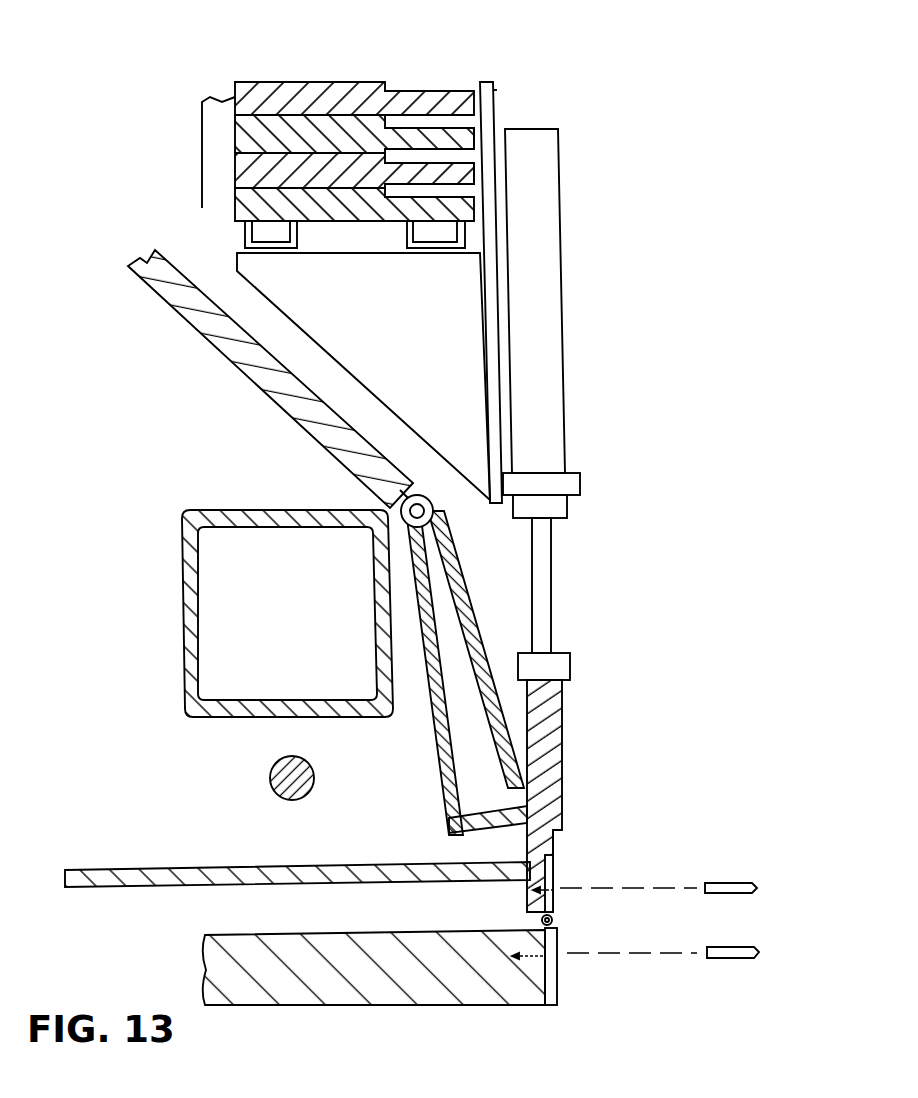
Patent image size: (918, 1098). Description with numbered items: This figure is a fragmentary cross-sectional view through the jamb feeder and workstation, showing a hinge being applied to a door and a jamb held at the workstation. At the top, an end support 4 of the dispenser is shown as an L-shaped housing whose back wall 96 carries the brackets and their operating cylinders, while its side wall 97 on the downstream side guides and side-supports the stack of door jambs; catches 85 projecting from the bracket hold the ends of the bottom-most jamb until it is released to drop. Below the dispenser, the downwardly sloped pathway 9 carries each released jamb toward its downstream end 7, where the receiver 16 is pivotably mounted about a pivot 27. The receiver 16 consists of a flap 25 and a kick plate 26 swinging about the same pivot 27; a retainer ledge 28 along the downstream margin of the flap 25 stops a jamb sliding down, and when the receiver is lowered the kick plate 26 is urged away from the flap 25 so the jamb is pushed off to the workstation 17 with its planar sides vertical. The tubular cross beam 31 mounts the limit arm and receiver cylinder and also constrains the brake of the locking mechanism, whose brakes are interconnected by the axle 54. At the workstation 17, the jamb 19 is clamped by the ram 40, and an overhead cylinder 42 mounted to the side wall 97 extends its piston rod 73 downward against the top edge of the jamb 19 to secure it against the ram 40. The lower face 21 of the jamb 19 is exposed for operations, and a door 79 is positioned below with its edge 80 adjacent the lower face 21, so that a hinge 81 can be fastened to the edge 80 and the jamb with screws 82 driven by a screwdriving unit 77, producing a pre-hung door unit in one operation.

The end support 4 is at (484, 82).
The downstream end 7 is at (420, 486).
The pathway 9 is at (200, 253).
The receiver 16 is at (375, 725).
The workstation 17 is at (652, 785).
The door jamb 19 is at (235, 108).
The lower face 21 is at (437, 157).
The flap 25 is at (440, 766).
The kick plate 26 is at (466, 603).
The pivot 27 is at (430, 511).
The retainer ledge 28 is at (470, 830).
The tubular cross beam 31 is at (182, 616).
The ram 40 is at (234, 868).
The overhead cylinder 42 is at (550, 392).
The axle 54 is at (275, 778).
The piston rod 73 is at (545, 594).
The screwdriving unit 77 is at (752, 959).
The door 79 is at (363, 975).
The edge 80 is at (558, 1000).
The hinge 81 is at (557, 931).
The screws 82 is at (555, 895).
The catch 85 is at (405, 237).
The back wall 96 is at (415, 352).
The side wall 97 is at (497, 92).